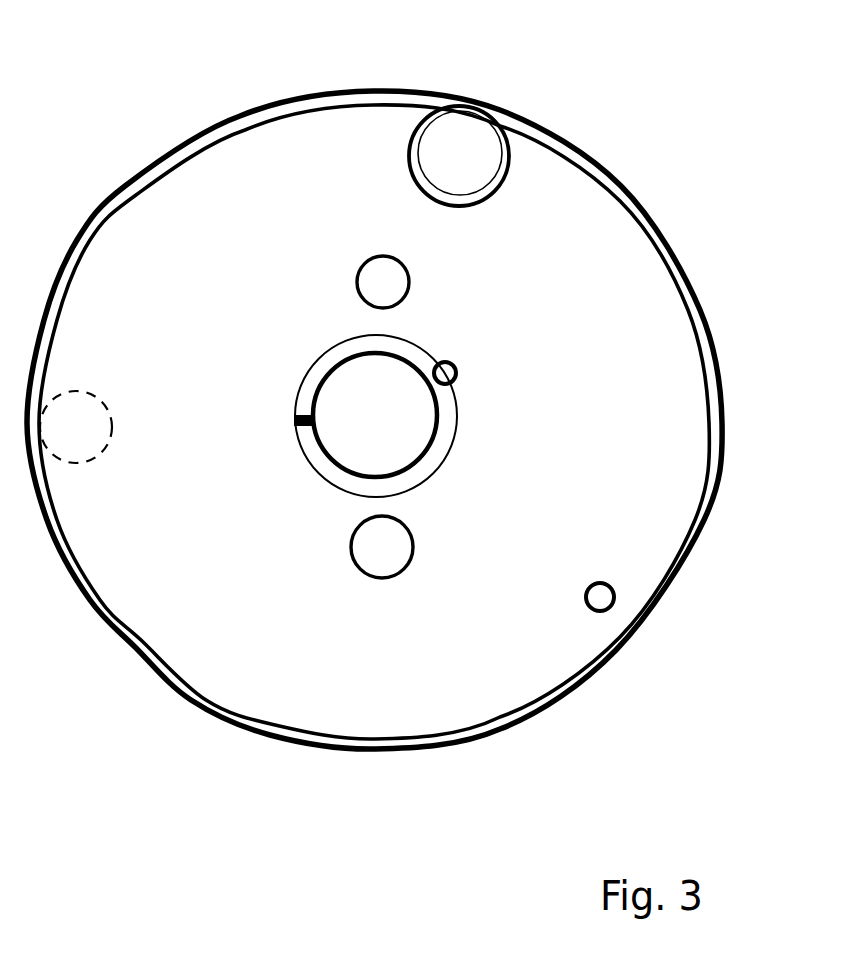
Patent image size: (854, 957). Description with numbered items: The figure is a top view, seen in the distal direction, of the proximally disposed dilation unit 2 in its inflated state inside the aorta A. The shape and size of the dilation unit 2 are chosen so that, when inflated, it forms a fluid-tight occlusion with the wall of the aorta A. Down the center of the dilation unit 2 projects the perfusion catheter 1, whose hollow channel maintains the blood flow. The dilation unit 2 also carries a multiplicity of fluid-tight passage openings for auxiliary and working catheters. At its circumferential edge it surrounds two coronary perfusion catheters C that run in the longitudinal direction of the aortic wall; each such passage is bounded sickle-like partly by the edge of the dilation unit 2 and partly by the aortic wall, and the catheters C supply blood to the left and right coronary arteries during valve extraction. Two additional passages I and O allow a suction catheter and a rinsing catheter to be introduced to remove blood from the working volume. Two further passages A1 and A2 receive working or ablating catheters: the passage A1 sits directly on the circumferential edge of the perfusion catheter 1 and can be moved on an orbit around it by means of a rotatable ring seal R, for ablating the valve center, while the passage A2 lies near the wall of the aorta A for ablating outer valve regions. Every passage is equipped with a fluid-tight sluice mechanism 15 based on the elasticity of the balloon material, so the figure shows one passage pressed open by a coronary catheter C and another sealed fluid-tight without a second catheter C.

The fluid-tight sluice mechanism 15 is at (284, 112).
The aorta A is at (629, 192).
The perfusion catheter 1 is at (375, 415).
The rotatable ring seal R is at (313, 458).
The passage A1 is at (469, 368).
The passage A2 is at (597, 576).
The dilation unit 2 is at (590, 364).
The passage I is at (384, 296).
The passage O is at (382, 547).
The coronary perfusion catheter C is at (274, 284).